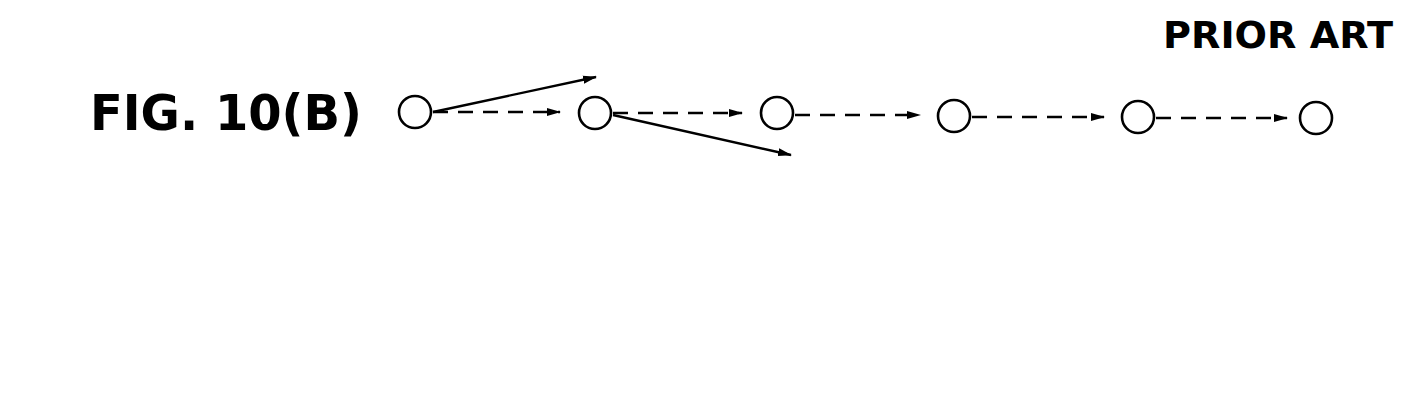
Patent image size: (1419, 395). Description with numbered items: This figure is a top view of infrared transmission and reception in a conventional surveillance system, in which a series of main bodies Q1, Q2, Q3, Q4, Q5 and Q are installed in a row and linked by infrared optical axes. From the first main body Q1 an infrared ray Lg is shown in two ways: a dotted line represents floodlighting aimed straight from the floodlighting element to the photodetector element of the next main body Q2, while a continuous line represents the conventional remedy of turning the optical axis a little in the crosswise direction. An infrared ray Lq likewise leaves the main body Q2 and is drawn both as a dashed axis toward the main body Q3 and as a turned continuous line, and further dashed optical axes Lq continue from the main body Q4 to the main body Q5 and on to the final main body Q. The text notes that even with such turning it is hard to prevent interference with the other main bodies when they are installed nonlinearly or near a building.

The main body Q1 is at (422, 90).
The main body Q2 is at (601, 133).
The main body Q3 is at (782, 92).
The main body Q4 is at (960, 135).
The main body Q5 is at (1146, 96).
The main body Q is at (1316, 137).
The infrared ray (optical axis) Lg is at (518, 95).
The infrared ray (optical axis) Lq is at (717, 137).